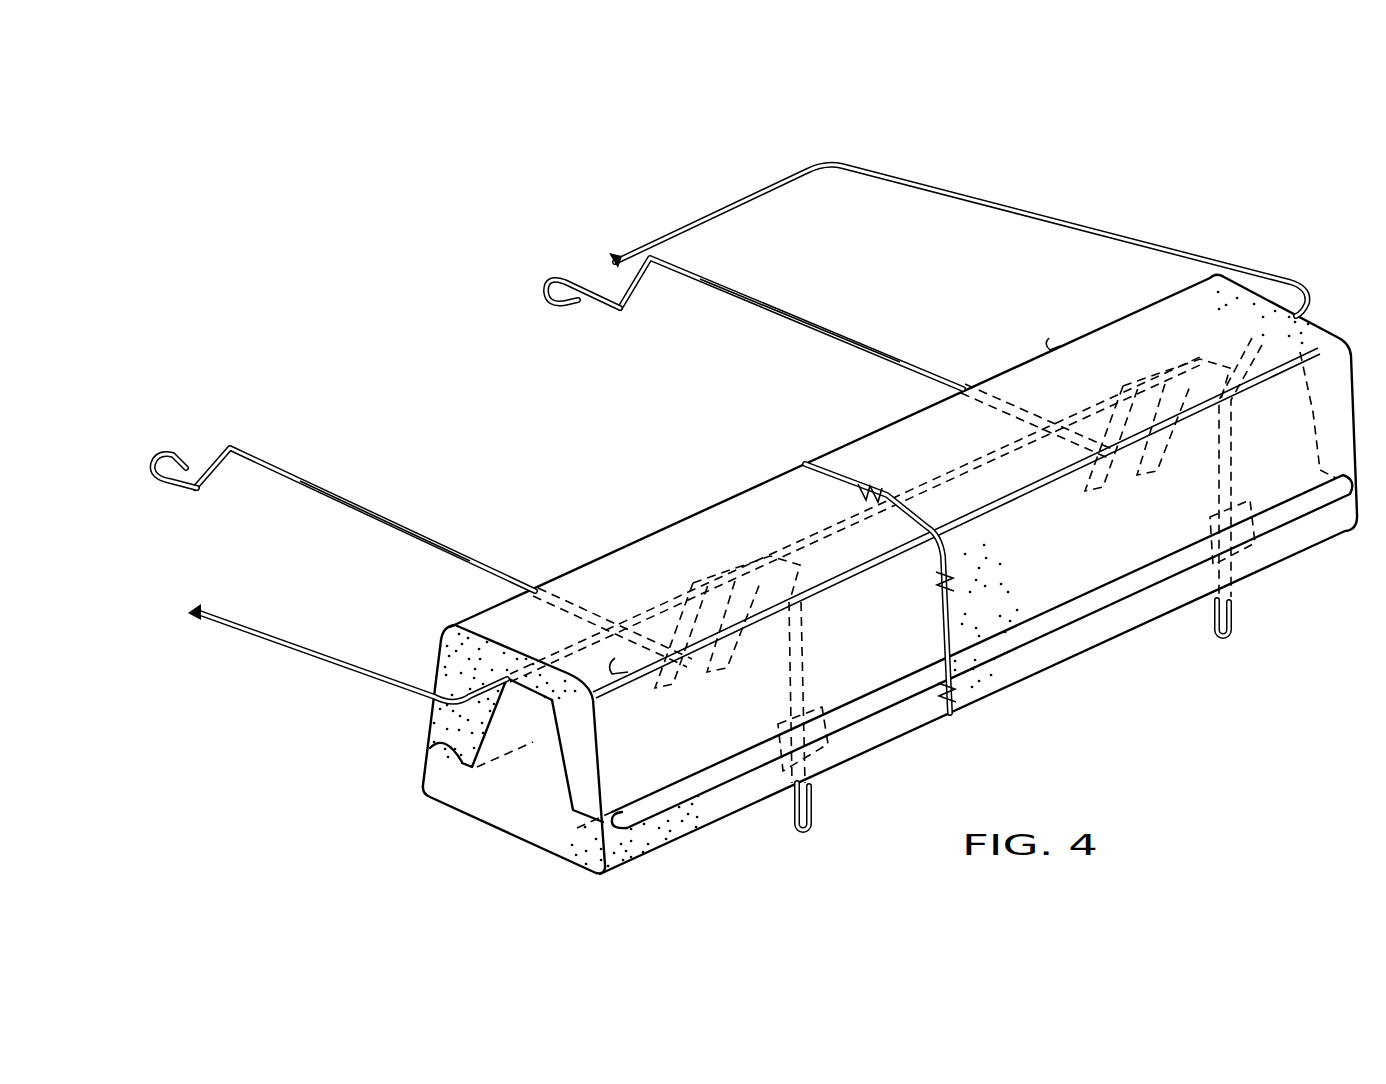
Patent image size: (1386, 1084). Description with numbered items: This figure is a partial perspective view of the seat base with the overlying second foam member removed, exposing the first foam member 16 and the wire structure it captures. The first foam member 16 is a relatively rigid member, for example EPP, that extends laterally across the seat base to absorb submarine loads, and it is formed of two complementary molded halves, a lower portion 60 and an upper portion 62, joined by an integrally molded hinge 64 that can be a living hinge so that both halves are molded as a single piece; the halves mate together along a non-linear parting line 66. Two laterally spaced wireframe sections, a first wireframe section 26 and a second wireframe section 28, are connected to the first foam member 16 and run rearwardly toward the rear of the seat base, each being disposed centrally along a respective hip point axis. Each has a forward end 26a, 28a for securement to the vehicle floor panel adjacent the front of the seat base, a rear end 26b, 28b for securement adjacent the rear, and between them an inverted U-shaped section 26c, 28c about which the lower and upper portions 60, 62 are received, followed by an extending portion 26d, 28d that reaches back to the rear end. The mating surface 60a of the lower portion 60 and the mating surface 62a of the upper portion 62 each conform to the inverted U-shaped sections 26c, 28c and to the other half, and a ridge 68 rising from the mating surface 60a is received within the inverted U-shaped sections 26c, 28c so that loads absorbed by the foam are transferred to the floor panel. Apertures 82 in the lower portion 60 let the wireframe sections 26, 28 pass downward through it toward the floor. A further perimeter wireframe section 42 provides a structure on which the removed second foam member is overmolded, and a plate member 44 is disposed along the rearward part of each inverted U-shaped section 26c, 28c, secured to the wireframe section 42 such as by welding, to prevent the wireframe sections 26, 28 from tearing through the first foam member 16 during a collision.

The first foam member 16 is at (1055, 660).
The first wireframe section 26 is at (442, 549).
The forward end of first wireframe section 26a is at (815, 803).
The rear end of first wireframe section 26b is at (175, 453).
The inverted U-shaped section of first wireframe section 26c is at (815, 612).
The extending portion of first wireframe section 26d is at (375, 513).
The second wireframe section 28 is at (824, 332).
The forward end of second wireframe section 28a is at (1213, 625).
The rear end of second wireframe section 28b is at (555, 306).
The inverted U-shaped section of second wireframe section 28c is at (1225, 435).
The extending portion of second wireframe section 28d is at (778, 313).
The wireframe section 42 is at (995, 200).
The plate member 44 is at (752, 570).
The lower portion 60 is at (483, 807).
The mating surface of lower portion 60a is at (443, 753).
The upper portion 62 is at (455, 640).
The mating surface of upper portion 62a is at (425, 770).
The integrally molded hinge 64 is at (697, 790).
The parting line 66 is at (567, 783).
The ridge 68 is at (510, 725).
The apertures 82 is at (838, 753).